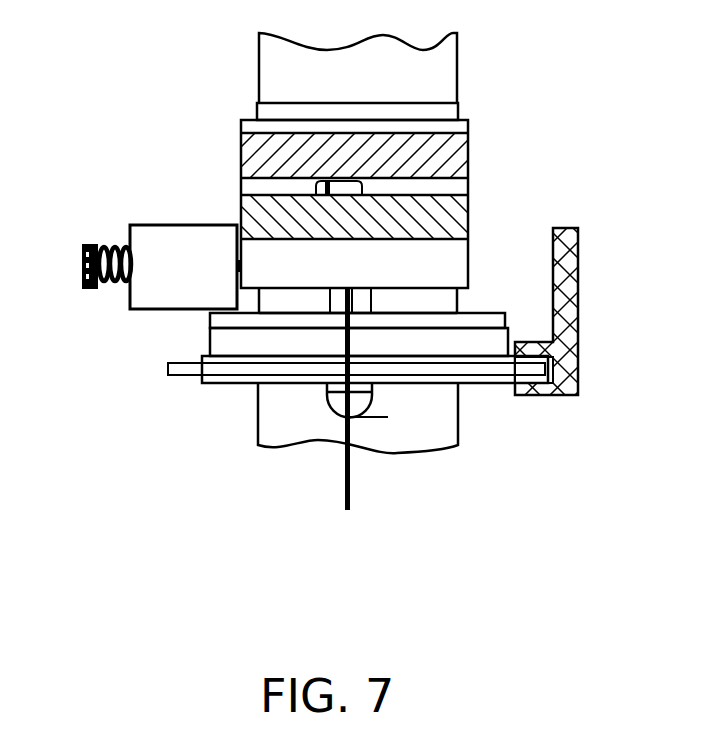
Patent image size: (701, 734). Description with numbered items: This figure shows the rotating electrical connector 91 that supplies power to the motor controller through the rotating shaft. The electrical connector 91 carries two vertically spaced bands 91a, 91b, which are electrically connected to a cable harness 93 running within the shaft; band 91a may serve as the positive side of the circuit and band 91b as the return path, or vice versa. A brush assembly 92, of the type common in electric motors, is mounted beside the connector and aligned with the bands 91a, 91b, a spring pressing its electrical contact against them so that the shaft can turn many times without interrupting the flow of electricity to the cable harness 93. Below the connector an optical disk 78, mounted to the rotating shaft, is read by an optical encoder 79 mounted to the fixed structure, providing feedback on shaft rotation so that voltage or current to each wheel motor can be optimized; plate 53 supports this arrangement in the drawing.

The mounting plate 53 is at (218, 337).
The optical disk 78 is at (180, 370).
The optical encoder 79 is at (572, 378).
The electrical connector 91 is at (452, 187).
The band 91a is at (247, 160).
The band 91b is at (247, 210).
The brush assembly 92 is at (150, 305).
The cable harness 93 is at (350, 483).